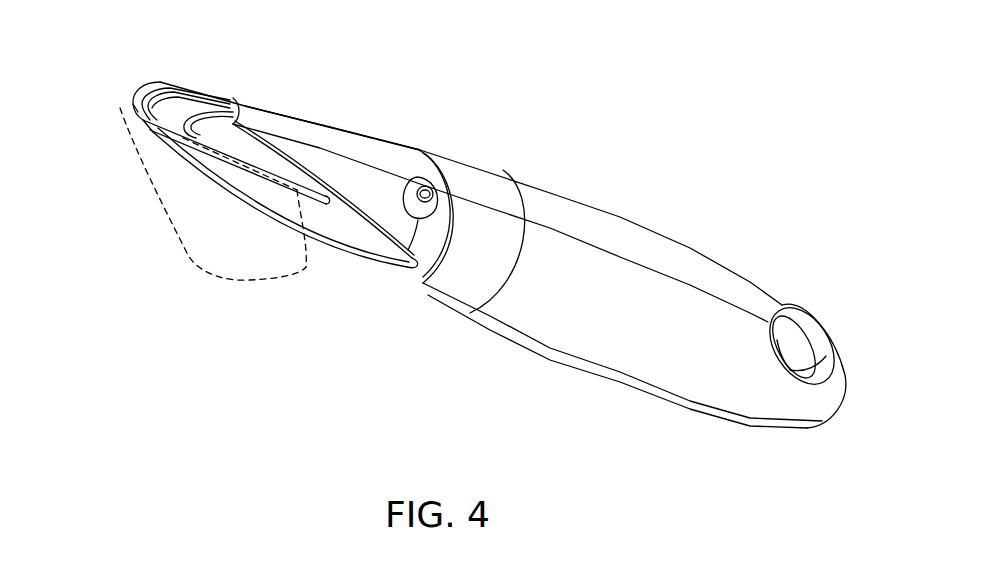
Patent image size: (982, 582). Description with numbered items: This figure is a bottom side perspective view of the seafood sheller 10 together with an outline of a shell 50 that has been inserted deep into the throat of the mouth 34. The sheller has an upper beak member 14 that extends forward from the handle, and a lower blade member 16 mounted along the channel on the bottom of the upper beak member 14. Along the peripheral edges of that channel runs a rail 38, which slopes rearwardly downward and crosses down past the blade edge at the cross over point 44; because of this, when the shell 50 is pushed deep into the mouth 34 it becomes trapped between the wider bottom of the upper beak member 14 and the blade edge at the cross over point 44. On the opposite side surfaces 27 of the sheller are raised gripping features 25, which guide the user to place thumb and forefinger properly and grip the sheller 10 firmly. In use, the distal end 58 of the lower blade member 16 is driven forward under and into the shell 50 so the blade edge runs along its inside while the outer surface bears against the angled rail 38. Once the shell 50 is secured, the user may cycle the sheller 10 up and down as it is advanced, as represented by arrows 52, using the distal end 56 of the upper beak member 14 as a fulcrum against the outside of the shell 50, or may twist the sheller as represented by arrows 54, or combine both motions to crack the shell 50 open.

The seafood sheller 10 is at (743, 89).
The upper beak member 14 is at (257, 107).
The lower blade member 16 is at (371, 248).
The gripping features 25 is at (417, 177).
The side surfaces 27 is at (488, 232).
The mouth 34 is at (118, 97).
The rail 38 is at (278, 153).
The cross over point 44 is at (312, 155).
The shell 50 is at (178, 236).
The arrows 52 is at (580, 172).
The arrows 54 is at (680, 218).
The distal end of the upper beak member 56 is at (149, 82).
The distal end of the lower blade member 58 is at (153, 127).